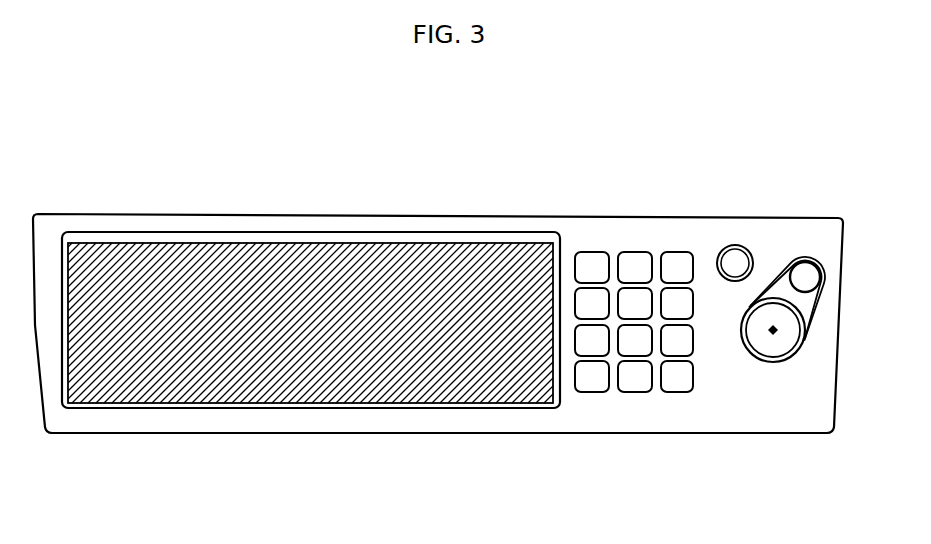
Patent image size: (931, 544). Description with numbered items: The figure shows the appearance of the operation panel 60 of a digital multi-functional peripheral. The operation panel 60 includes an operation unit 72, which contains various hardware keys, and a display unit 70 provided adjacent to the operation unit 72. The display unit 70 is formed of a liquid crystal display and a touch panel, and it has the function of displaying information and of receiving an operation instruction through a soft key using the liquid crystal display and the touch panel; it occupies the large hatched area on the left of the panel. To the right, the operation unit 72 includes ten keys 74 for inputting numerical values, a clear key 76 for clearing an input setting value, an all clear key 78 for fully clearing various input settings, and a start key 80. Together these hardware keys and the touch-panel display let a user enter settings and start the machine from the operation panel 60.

The operation panel 60 is at (330, 132).
The display unit 70 is at (127, 243).
The operation unit 72 is at (647, 324).
The ten keys 74 is at (632, 232).
The clear key 76 is at (717, 260).
The all clear key 78 is at (827, 350).
The start key 80 is at (742, 325).